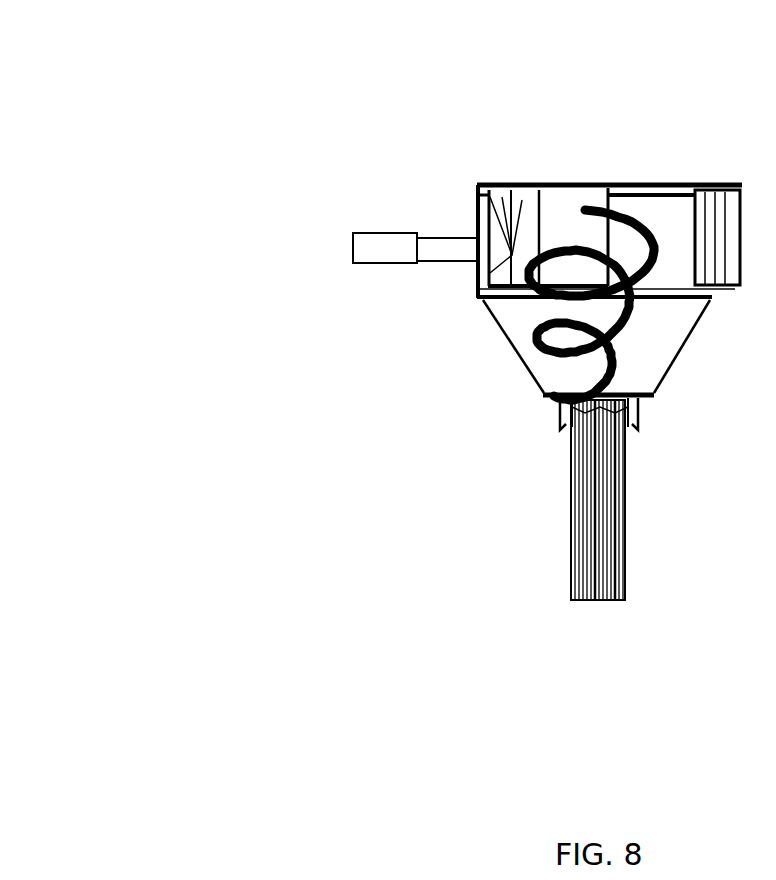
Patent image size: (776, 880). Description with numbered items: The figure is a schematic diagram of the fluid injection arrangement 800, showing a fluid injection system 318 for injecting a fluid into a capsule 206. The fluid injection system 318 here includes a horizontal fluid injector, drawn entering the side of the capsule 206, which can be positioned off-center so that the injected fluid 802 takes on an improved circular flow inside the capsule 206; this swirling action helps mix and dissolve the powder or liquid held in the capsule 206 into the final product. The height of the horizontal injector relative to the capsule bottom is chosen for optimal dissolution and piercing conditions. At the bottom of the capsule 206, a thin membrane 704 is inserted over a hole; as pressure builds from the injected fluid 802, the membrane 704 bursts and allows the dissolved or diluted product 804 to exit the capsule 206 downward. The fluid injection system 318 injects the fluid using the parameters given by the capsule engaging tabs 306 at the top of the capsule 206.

The dispensing assembly 800 is at (125, 44).
The fluid injection system 318 is at (440, 237).
The capsule 206 is at (611, 183).
The capsule engaging tabs 306 is at (731, 185).
The fluid 802 is at (631, 344).
The thin membrane 704 is at (640, 424).
The dissolved/diluted product 804 is at (572, 470).